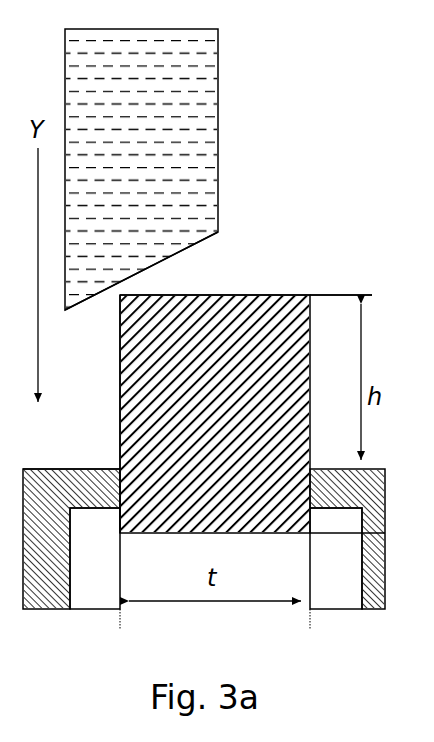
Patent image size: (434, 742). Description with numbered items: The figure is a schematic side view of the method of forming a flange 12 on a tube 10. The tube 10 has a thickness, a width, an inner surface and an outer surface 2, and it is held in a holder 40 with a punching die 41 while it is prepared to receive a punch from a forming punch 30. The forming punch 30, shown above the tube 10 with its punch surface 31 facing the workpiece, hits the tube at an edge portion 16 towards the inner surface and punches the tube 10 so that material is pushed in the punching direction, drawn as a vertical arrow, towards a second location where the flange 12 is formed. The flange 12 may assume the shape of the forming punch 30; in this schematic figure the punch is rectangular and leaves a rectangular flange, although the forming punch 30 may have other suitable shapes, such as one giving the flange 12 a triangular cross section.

The outer surface 2 is at (119, 362).
The tube 10 is at (300, 295).
The flange 12 is at (433, 312).
The edge portion 16 is at (203, 295).
The forming punch 30 is at (218, 133).
The punch surface 31 is at (202, 248).
The holder 40 is at (47, 610).
The punching die 41 is at (40, 469).